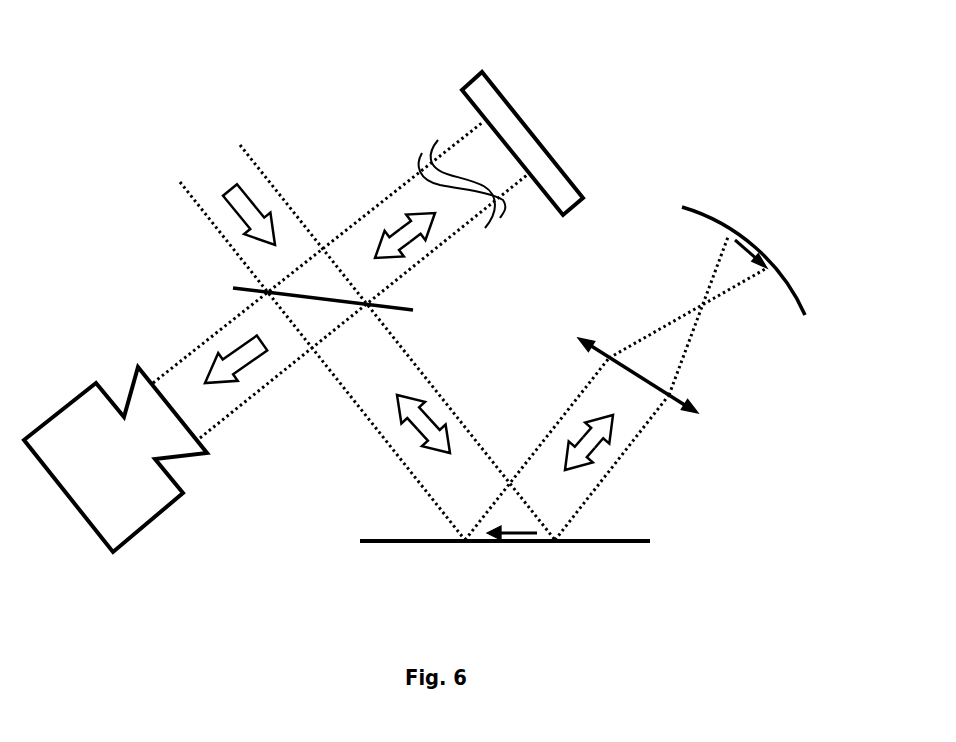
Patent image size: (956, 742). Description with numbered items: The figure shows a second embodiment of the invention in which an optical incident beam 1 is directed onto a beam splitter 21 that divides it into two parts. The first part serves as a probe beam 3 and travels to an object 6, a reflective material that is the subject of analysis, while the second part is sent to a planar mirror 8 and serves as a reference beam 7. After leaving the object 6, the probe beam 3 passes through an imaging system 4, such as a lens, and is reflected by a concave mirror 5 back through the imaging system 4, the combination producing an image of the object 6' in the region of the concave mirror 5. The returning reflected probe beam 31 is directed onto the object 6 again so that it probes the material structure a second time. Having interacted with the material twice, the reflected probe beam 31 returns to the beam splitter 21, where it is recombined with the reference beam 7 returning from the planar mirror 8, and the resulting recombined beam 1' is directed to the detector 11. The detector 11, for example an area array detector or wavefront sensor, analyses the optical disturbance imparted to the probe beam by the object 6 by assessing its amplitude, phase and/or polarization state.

The incident beam 1 is at (367, 337).
The recombined beam 1' is at (225, 335).
The detector 11 is at (183, 493).
The beam splitter 21 is at (400, 312).
The planar mirror 8 is at (530, 127).
The reference beam 7 is at (407, 237).
The probe beam 3 is at (437, 452).
The reflected probe beam 31 is at (398, 412).
The object 6 is at (505, 580).
The imaging system 4 is at (668, 395).
The concave mirror 5 is at (802, 303).
The image of the object 6' is at (749, 212).